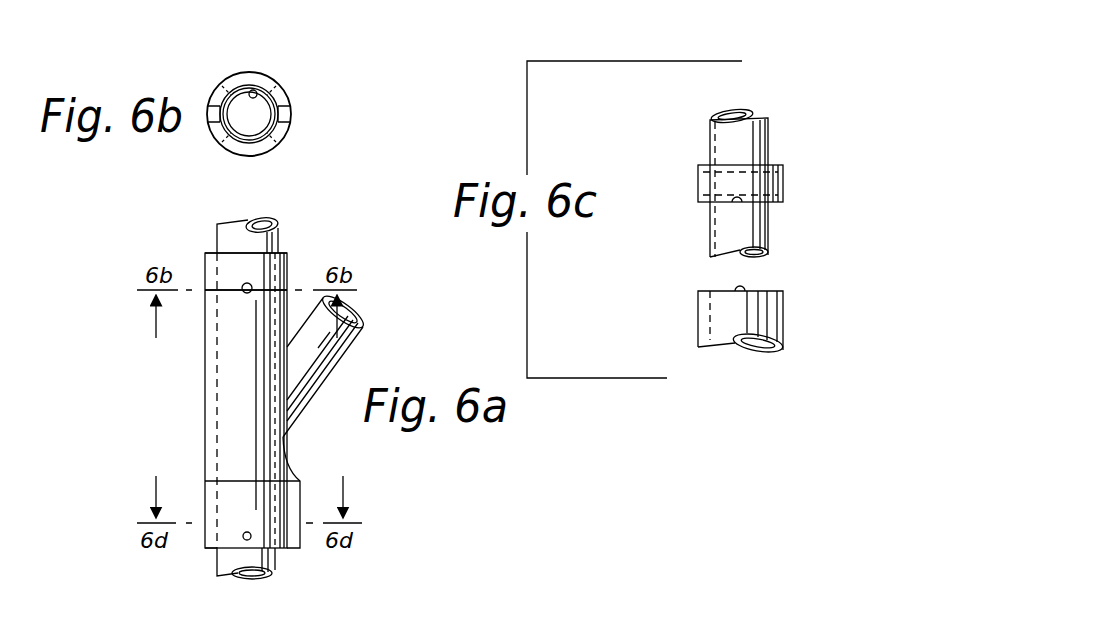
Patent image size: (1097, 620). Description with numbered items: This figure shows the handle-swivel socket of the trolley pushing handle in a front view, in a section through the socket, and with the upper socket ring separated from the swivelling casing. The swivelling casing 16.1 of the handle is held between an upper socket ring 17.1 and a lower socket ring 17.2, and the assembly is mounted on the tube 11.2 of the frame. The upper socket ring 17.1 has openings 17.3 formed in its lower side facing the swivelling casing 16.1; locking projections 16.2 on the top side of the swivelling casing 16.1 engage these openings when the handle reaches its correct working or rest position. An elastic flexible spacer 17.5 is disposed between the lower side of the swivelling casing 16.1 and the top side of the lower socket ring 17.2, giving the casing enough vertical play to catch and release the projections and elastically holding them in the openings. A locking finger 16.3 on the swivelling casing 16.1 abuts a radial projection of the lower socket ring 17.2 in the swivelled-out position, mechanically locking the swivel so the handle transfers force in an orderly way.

In FIG. 6B, the pipe section 11.2 is at (257, 91).
In FIG. 6A, the pipe section 11.2 is at (274, 230).
In FIG. 6C, the pipe section 11.2 is at (769, 131).
In FIG. 6A, the swivelling casing 16.1 is at (220, 372).
In FIG. 6C, the swivelling casing 16.1 is at (784, 312).
In FIG. 6C, the locking projections 16.2 is at (734, 290).
In FIG. 6A, the locking finger 16.3 is at (300, 548).
In FIG. 6B, the upper socket ring 17.1 is at (214, 94).
In FIG. 6A, the upper socket ring 17.1 is at (205, 270).
In FIG. 6C, the upper socket ring 17.1 is at (698, 181).
In FIG. 6A, the lower socket ring 17.2 is at (205, 548).
In FIG. 6C, the openings 17.3 is at (742, 205).
In FIG. 6A, the elastic flexible spacer 17.5 is at (205, 498).